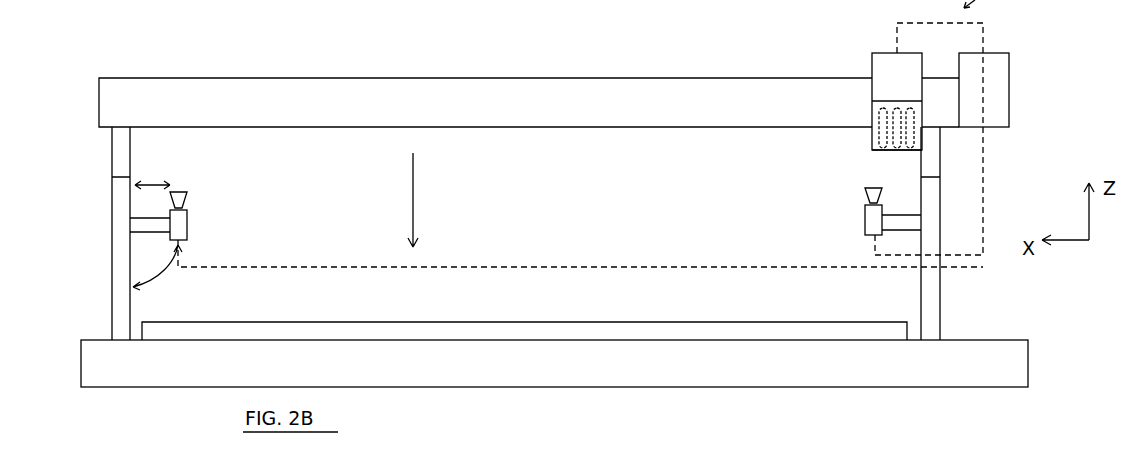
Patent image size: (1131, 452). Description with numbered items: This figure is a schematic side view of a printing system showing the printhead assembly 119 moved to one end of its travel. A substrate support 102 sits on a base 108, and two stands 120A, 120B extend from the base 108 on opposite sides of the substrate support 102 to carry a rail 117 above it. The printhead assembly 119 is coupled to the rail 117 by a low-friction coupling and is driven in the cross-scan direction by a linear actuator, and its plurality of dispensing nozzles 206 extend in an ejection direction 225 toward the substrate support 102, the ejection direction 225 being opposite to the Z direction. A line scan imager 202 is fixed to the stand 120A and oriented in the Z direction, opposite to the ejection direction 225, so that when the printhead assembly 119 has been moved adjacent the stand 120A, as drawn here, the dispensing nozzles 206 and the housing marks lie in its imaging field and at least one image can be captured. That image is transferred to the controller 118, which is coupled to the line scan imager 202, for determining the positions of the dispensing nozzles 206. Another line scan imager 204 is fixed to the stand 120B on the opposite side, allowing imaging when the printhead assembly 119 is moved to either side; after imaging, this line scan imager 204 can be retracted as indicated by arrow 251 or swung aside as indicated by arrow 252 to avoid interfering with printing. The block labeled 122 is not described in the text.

The substrate support 102 is at (340, 330).
The base 108 is at (1008, 345).
The rail 117 is at (138, 80).
The controller 118 is at (1000, 88).
The printhead assembly 119 is at (872, 130).
The stand 120A is at (928, 294).
The stand 120B is at (118, 243).
The housing 122 is at (872, 58).
The line scan imager 202 is at (872, 218).
The line scan imager 204 is at (187, 222).
The dispensing nozzles 206 is at (885, 140).
The ejection direction 225 is at (433, 200).
The arrow 251 is at (155, 175).
The arrow 252 is at (159, 275).